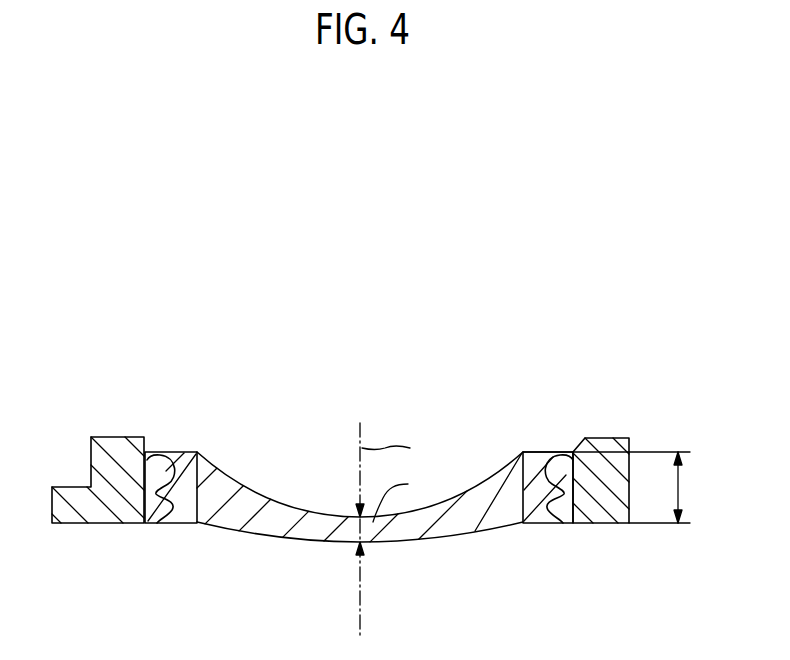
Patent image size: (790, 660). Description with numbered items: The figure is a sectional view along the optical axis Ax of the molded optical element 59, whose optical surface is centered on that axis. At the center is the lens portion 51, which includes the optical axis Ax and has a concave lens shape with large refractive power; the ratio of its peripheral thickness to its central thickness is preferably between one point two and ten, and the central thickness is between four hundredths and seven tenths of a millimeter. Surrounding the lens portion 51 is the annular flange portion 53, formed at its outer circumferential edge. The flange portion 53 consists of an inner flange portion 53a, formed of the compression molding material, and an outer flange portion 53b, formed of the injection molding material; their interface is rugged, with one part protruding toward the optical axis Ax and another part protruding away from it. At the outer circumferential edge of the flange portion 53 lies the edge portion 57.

The optical element 59 is at (533, 336).
The edge portion 57 is at (144, 432).
The annular flange portion 53 is at (197, 530).
The inner flange portion 53a is at (187, 463).
The outer flange portion 53b is at (147, 463).
The lens portion 51 is at (520, 553).